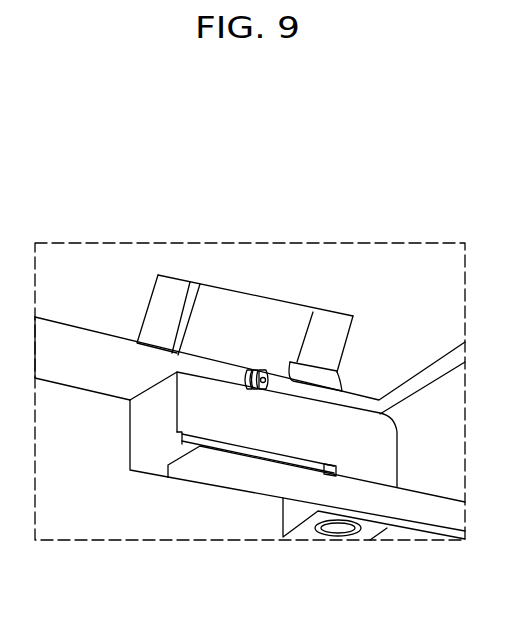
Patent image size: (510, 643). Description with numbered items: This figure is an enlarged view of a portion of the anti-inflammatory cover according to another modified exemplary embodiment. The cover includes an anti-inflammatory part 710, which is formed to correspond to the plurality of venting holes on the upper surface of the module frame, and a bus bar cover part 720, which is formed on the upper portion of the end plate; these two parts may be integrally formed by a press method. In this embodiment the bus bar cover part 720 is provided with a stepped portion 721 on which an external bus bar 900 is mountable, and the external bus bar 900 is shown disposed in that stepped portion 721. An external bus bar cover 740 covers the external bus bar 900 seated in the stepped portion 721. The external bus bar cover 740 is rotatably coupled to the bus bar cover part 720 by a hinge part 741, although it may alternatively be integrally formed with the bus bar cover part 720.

The anti-inflammatory part 710 is at (112, 262).
The bus bar cover part 720 is at (223, 517).
The stepped portion 721 is at (157, 467).
The external bus bar cover 740 is at (328, 324).
The hinge part 741 is at (254, 370).
The external bus bar 900 is at (412, 512).